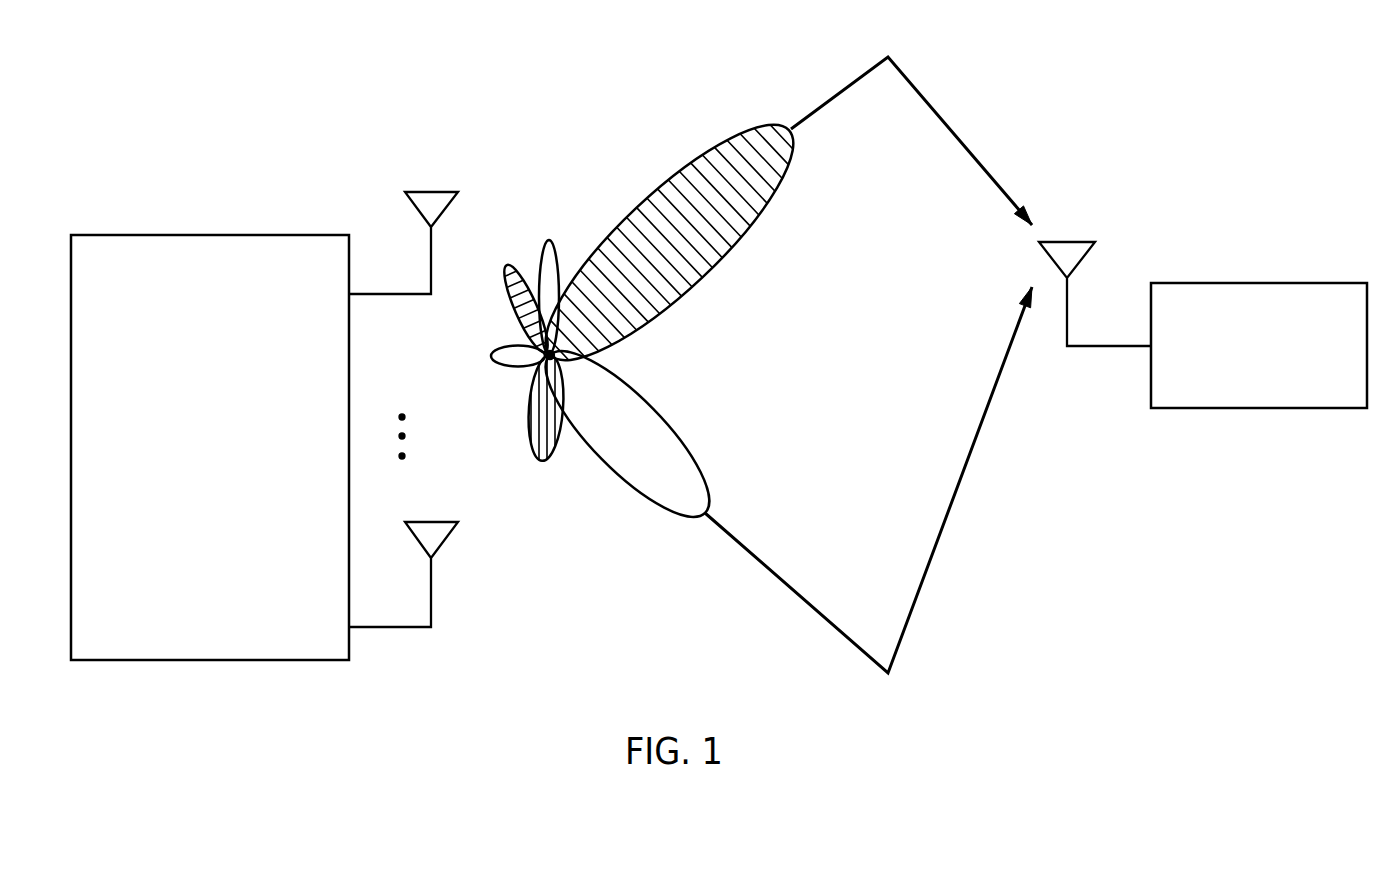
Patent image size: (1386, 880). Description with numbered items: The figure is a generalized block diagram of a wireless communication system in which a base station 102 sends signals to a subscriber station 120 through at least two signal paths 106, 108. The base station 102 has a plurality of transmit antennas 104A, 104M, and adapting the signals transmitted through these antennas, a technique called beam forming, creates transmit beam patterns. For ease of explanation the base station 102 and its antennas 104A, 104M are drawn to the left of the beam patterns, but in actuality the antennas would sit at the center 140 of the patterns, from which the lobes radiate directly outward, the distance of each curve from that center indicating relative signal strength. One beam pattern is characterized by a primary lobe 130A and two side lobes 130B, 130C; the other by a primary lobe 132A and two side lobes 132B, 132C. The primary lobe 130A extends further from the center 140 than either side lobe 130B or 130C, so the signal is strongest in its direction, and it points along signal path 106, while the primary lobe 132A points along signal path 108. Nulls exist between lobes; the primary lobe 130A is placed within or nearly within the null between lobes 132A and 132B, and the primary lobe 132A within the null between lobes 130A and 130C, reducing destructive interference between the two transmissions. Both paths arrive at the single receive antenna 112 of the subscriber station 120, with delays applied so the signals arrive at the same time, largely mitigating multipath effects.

The base station 102 is at (213, 235).
The transmit antenna 104A is at (425, 191).
The transmit antenna 104M is at (447, 534).
The signal path 106 is at (927, 95).
The signal path 108 is at (930, 563).
The receive antenna 112 is at (1073, 241).
The subscriber station 120 is at (1290, 283).
The primary lobe 130A is at (664, 177).
The side lobe 130B is at (507, 265).
The side lobe 130C is at (542, 463).
The primary lobe 132A is at (687, 452).
The side lobe 132B is at (548, 240).
The side lobe 132C is at (493, 359).
The center 140 is at (556, 356).